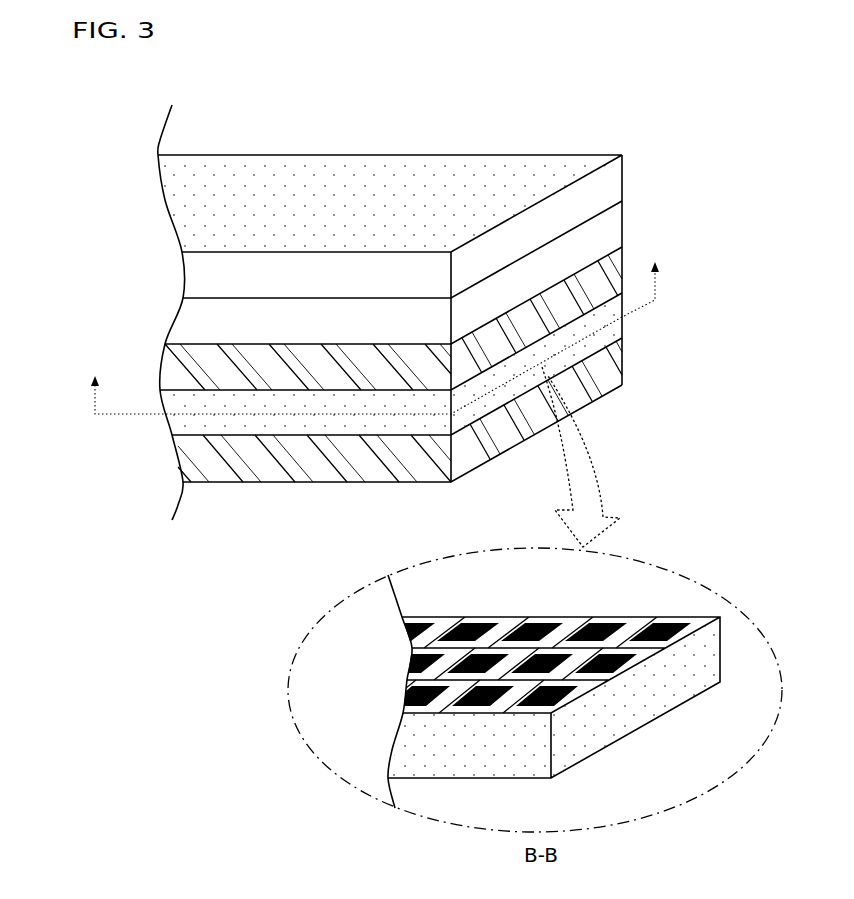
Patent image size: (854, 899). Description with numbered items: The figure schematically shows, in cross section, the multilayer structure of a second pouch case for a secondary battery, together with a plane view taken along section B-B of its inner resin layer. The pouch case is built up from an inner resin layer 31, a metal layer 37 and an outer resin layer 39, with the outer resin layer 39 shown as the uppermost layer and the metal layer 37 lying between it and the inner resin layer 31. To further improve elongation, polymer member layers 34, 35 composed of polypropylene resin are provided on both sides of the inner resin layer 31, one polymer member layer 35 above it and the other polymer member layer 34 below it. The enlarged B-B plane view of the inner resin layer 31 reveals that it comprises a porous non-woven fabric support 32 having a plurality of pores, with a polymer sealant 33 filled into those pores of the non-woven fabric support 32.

The inner resin layer 31 is at (614, 328).
The porous non-woven fabric support 32 is at (628, 619).
The polymer sealant 33 is at (538, 625).
The polymer member layer 34 is at (190, 455).
The polymer member layer 35 is at (168, 364).
The metal layer 37 is at (184, 318).
The outer resin layer 39 is at (181, 270).